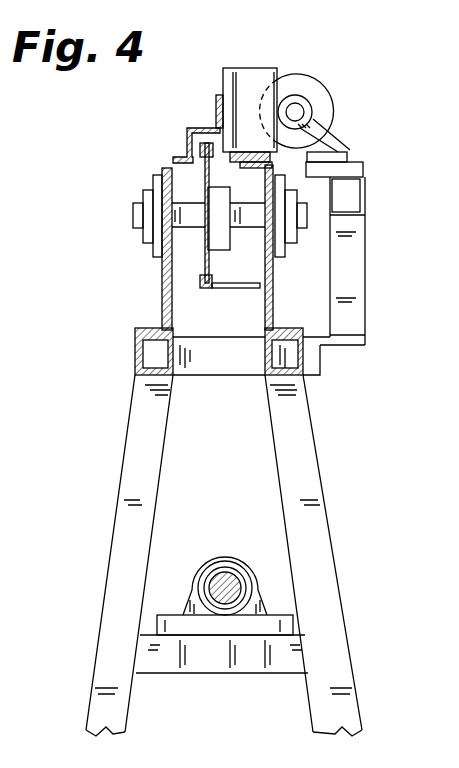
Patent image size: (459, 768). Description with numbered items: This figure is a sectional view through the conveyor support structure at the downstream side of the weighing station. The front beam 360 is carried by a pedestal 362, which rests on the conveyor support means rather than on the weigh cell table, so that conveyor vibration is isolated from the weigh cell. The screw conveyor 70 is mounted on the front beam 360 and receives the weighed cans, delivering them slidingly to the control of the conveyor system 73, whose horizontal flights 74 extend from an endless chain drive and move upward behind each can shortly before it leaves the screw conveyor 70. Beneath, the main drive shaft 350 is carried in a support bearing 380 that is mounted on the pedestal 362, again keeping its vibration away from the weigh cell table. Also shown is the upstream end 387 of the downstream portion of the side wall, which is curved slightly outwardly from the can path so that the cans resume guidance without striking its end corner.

The screw conveyor 70 is at (332, 113).
The conveyor system 73 is at (200, 278).
The horizontal flights 74 is at (258, 142).
The main drive shaft 350 is at (227, 602).
The front beam 360 is at (365, 203).
The pedestal 362 is at (310, 482).
The support bearing 380 is at (225, 558).
The upstream end of downstream sidewall portion 387 is at (216, 102).